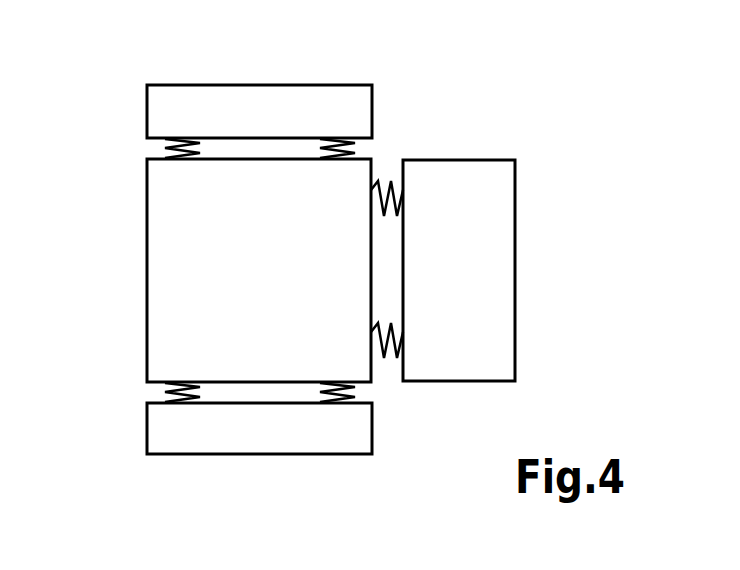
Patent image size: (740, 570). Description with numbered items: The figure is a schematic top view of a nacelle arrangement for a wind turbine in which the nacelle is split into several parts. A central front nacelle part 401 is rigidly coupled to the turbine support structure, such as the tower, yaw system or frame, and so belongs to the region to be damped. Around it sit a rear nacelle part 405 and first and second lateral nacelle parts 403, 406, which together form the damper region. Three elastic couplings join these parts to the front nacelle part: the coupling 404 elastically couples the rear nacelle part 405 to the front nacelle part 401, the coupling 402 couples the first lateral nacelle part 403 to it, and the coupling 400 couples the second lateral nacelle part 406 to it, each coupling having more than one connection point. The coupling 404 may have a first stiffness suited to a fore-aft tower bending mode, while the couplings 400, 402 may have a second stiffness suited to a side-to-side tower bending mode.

The elastic coupling 400 is at (167, 150).
The front nacelle part 401 is at (168, 267).
The elastic coupling 402 is at (168, 396).
The first lateral nacelle part 403 is at (258, 428).
The elastic coupling 404 is at (385, 358).
The rear nacelle part 405 is at (465, 182).
The second lateral nacelle part 406 is at (268, 108).